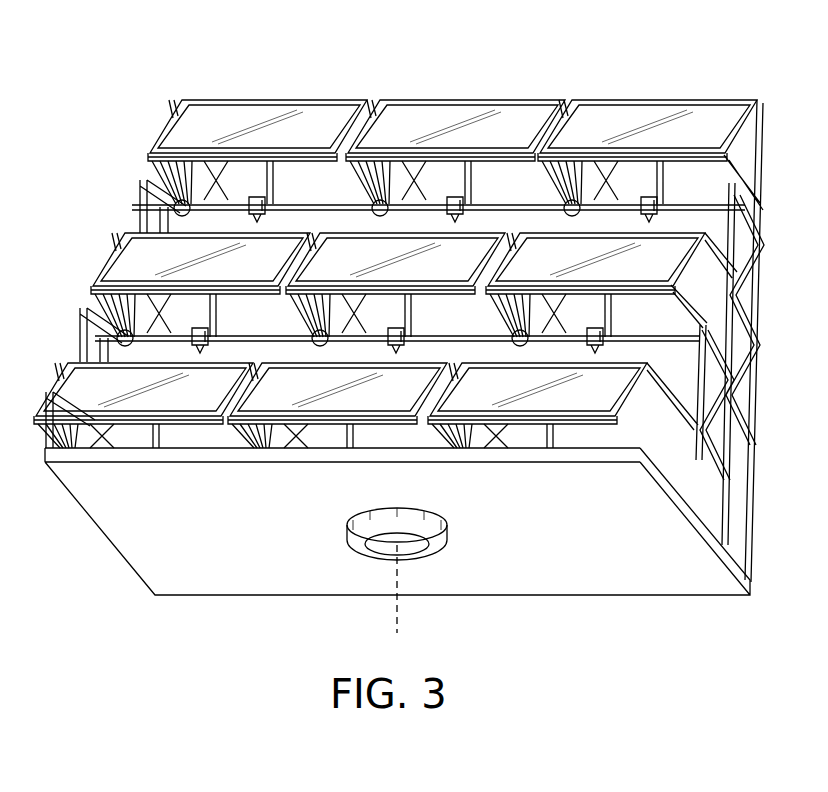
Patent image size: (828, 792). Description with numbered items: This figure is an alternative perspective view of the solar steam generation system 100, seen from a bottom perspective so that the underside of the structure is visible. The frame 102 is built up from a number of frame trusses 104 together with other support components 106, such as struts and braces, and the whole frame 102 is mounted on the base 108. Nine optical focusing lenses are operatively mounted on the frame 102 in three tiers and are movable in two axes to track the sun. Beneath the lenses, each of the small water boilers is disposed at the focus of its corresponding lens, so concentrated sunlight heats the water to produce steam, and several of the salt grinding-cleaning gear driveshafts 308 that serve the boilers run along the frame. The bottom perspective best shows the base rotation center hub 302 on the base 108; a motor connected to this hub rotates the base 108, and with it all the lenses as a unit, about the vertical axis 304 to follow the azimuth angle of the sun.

The solar steam generation system 100 is at (115, 80).
The frame 102 is at (62, 310).
The frame trusses 104 is at (133, 183).
The support components 106 is at (741, 157).
The base 108 is at (150, 542).
The base rotation center hub 302 is at (358, 540).
The vertical axis 304 is at (397, 613).
The mini water boiler salt grinding-cleaning gear driveshaft 308 is at (493, 204).